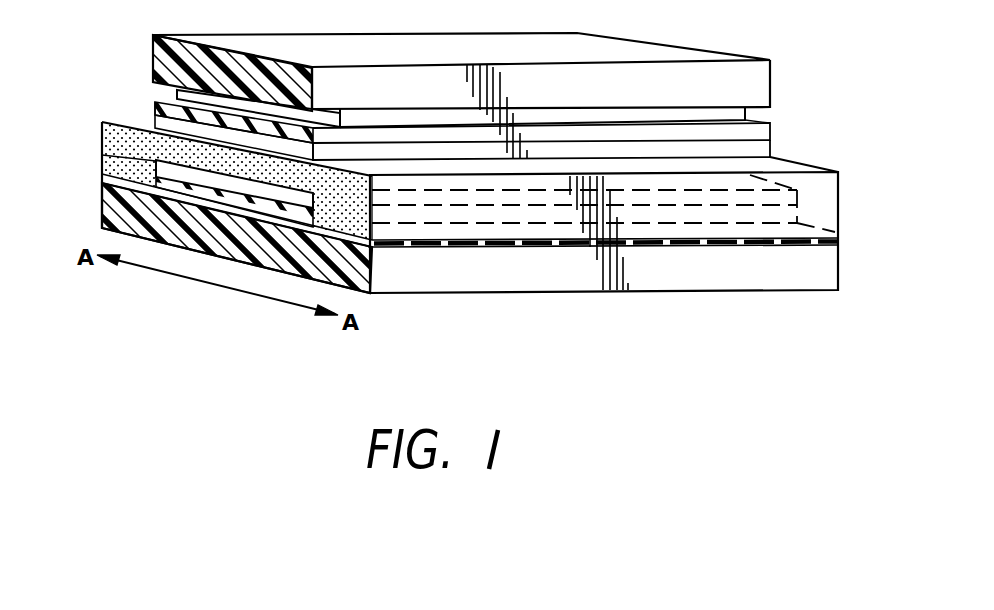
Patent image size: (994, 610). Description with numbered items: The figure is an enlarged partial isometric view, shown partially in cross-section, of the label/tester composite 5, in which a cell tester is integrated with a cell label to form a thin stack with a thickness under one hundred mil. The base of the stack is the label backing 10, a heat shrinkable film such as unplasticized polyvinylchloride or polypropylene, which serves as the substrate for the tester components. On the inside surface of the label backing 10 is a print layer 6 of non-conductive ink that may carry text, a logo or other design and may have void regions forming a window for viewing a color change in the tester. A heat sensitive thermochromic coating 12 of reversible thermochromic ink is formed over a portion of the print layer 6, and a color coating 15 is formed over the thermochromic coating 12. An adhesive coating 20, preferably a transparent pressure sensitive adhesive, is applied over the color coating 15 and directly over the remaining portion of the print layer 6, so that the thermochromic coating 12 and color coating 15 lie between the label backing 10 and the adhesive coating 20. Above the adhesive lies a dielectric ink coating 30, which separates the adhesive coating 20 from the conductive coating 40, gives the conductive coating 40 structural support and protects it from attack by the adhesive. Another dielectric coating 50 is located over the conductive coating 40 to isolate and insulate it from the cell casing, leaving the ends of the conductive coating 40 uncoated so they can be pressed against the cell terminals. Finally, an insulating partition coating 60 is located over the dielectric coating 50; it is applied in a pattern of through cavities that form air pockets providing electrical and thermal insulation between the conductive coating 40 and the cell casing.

The label/tester composite 5 is at (654, 299).
The print layer 6 is at (837, 240).
The label backing 10 is at (100, 210).
The thermochromic coating 12 is at (102, 174).
The color coating 15 is at (102, 155).
The adhesive coating 20 is at (100, 133).
The dielectric ink coating 30 is at (155, 121).
The conductive coating 40 is at (153, 108).
The dielectric coating 50 is at (177, 90).
The insulating partition coating 60 is at (153, 57).